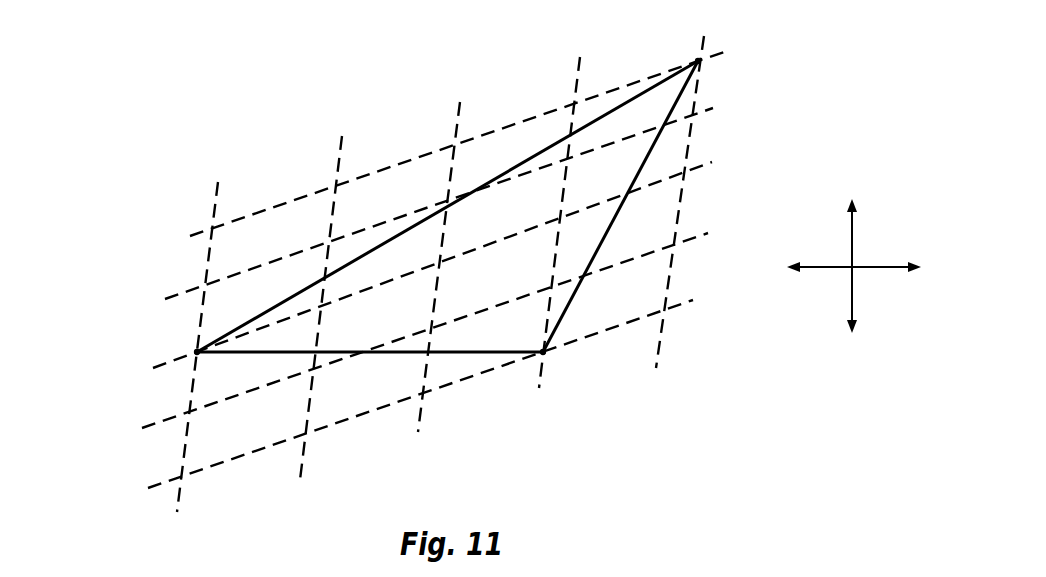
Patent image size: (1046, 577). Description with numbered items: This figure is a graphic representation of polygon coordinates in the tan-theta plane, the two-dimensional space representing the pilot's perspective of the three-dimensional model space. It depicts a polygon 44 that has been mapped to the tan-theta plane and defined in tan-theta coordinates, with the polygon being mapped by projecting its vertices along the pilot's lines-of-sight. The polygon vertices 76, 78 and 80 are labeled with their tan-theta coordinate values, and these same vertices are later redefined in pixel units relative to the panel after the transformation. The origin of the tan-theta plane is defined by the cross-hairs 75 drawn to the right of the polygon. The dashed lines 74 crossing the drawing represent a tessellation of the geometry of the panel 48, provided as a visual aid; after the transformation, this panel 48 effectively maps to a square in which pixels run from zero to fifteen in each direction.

The dashed lines 74 is at (330, 428).
The polygon 44 is at (667, 95).
The panel 48 is at (533, 247).
The polygon vertex 80 is at (698, 60).
The polygon vertex 76 is at (195, 350).
The polygon vertex 78 is at (543, 353).
The cross-hairs 75 is at (851, 268).